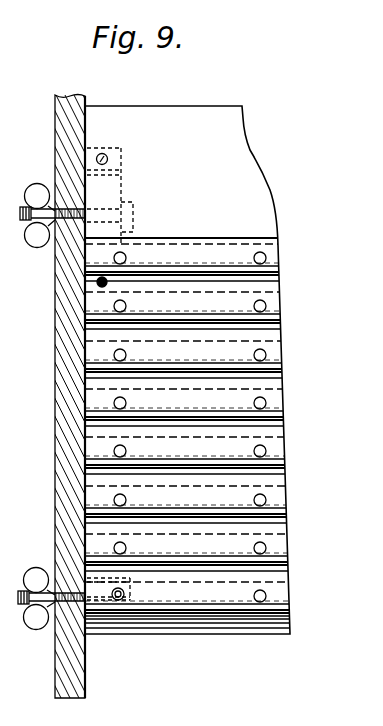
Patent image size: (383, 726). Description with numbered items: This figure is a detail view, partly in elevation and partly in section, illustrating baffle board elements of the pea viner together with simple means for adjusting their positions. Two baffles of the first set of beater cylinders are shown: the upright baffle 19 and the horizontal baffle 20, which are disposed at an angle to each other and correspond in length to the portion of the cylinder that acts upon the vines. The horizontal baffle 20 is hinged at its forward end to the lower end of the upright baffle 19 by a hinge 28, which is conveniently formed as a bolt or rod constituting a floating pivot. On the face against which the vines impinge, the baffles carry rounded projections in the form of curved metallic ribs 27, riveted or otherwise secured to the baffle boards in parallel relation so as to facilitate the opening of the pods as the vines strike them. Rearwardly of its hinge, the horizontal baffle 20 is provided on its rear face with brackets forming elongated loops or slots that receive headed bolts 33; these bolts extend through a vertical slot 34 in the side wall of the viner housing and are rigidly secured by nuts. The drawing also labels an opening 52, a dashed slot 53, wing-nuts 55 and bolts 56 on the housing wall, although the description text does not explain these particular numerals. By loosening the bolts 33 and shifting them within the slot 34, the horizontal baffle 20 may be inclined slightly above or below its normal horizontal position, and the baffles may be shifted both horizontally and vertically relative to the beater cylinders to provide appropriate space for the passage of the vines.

The upright baffle 19 is at (258, 226).
The horizontal baffle 20 is at (283, 622).
The curved metallic ribs 27 is at (280, 353).
The hinge 28 is at (176, 607).
The headed bolt 33 is at (123, 590).
The vertical slot 34 is at (60, 655).
The hole 52 is at (109, 159).
The slot 53 is at (133, 218).
The wing nut 55 is at (27, 196).
The bolt 56 is at (65, 225).